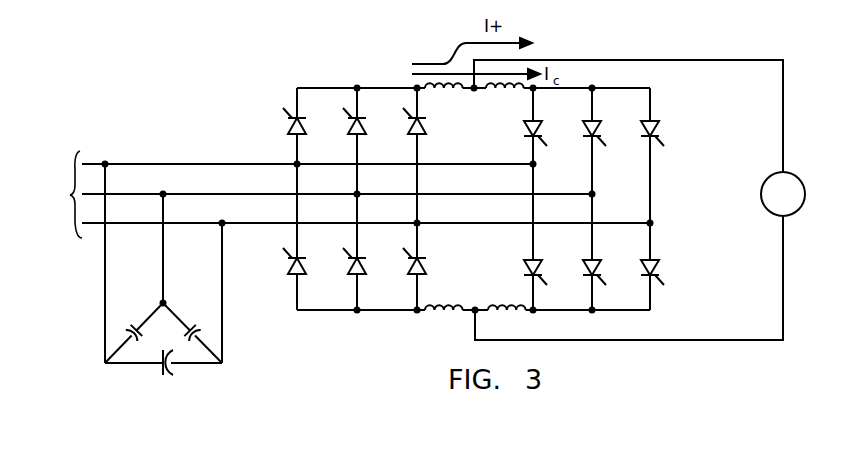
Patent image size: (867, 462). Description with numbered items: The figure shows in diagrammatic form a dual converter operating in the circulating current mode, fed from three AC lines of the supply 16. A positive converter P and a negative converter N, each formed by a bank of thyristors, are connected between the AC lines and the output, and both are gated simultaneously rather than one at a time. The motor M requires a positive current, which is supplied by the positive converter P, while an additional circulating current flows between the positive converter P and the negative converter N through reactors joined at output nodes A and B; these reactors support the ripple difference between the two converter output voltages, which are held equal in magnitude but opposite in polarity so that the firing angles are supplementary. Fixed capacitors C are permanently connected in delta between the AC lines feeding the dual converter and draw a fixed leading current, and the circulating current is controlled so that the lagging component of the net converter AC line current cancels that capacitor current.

The three-phase AC voltage source 16 is at (70, 195).
The positive converter P is at (331, 199).
The negative converter N is at (620, 199).
The fixed capacitors C is at (163, 285).
The DC motor M is at (639, 200).
The positive output node with reactors A is at (474, 107).
The negative output node with reactors B is at (475, 305).